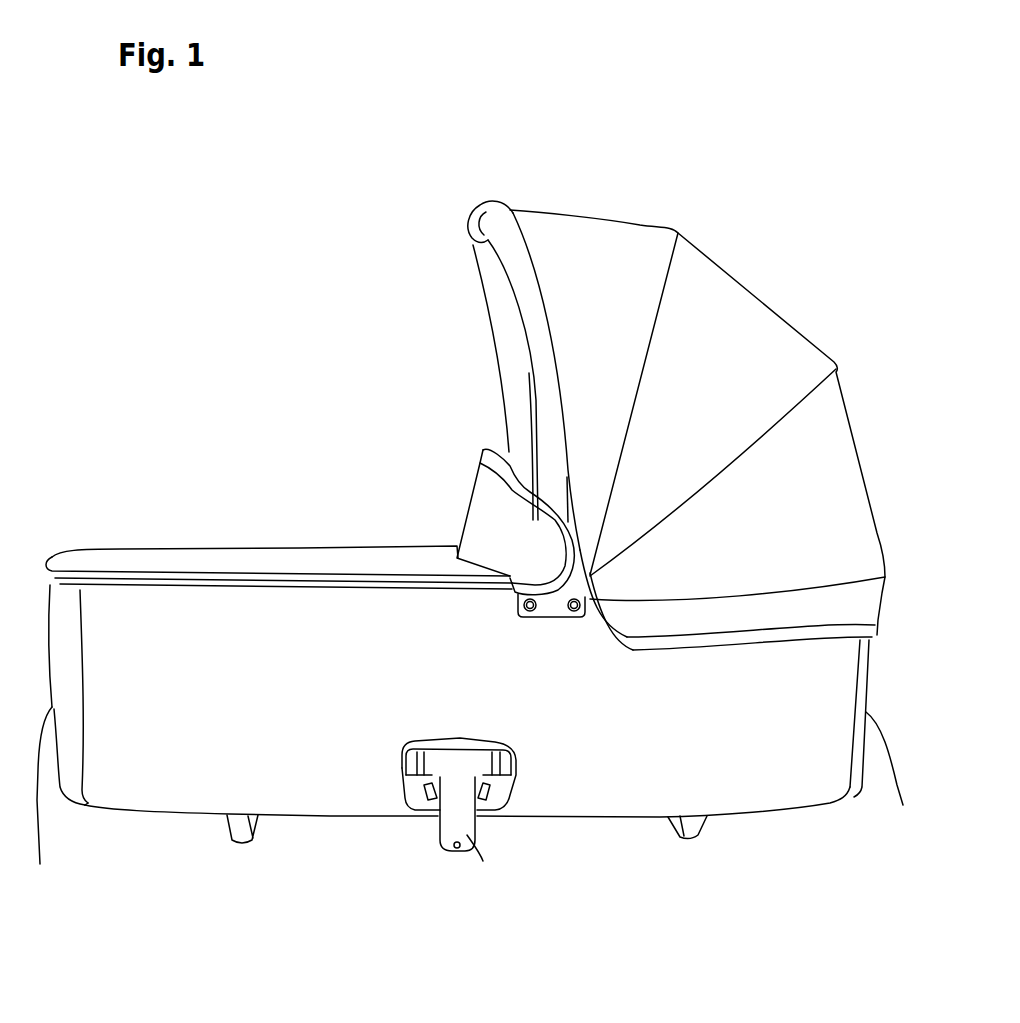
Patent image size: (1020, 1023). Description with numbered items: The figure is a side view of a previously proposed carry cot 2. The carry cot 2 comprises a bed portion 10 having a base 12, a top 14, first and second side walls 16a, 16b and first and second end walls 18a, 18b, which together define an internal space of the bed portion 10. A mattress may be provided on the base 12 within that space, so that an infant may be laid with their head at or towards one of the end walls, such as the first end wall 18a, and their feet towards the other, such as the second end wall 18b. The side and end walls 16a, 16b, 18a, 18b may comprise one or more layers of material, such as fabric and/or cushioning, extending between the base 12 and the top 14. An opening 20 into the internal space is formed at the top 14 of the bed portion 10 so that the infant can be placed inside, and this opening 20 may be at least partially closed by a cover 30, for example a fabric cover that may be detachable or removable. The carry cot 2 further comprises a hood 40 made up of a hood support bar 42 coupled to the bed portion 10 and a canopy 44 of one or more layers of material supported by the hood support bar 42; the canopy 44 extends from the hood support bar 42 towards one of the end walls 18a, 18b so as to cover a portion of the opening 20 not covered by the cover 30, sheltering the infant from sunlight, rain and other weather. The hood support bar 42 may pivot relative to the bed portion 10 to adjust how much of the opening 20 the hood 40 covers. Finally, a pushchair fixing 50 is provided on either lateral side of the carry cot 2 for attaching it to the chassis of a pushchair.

The carry cot 2 is at (595, 173).
The bed portion 10 is at (212, 497).
The base 12 is at (573, 817).
The top 14 is at (398, 547).
The first side wall 16a is at (336, 745).
The second side wall 16b is at (187, 548).
The first end wall 18a is at (903, 805).
The second end wall 18b is at (40, 862).
The opening 20 is at (475, 440).
The cover 30 is at (292, 562).
The hood 40 is at (777, 260).
The hood support bar 42 is at (480, 210).
The canopy 44 is at (757, 336).
The pushchair fixing 50 is at (470, 838).